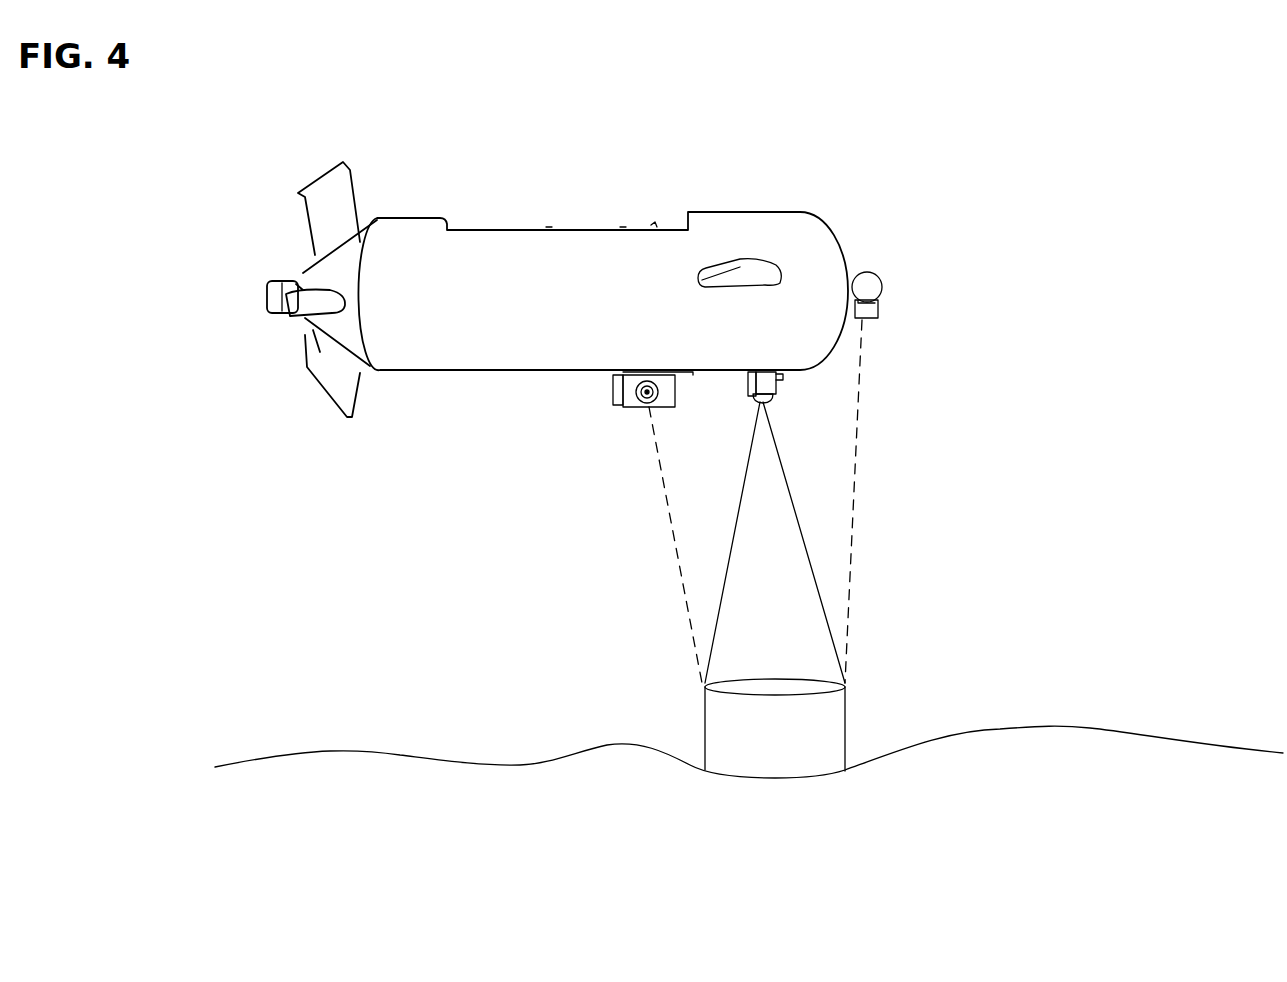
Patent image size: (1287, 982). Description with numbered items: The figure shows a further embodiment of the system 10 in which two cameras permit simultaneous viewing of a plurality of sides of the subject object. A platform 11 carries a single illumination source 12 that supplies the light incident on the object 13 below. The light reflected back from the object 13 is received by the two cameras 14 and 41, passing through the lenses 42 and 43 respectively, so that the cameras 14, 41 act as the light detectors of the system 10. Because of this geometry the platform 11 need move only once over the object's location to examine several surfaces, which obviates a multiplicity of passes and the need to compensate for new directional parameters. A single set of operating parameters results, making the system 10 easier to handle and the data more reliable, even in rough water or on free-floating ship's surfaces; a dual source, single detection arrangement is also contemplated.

The system 10 is at (844, 142).
The platform 11 is at (606, 229).
The illumination source 12 is at (748, 405).
The object 13 is at (845, 723).
The camera 14 is at (613, 405).
The camera 41 is at (870, 282).
The lens 42 is at (640, 405).
The lens 43 is at (877, 314).